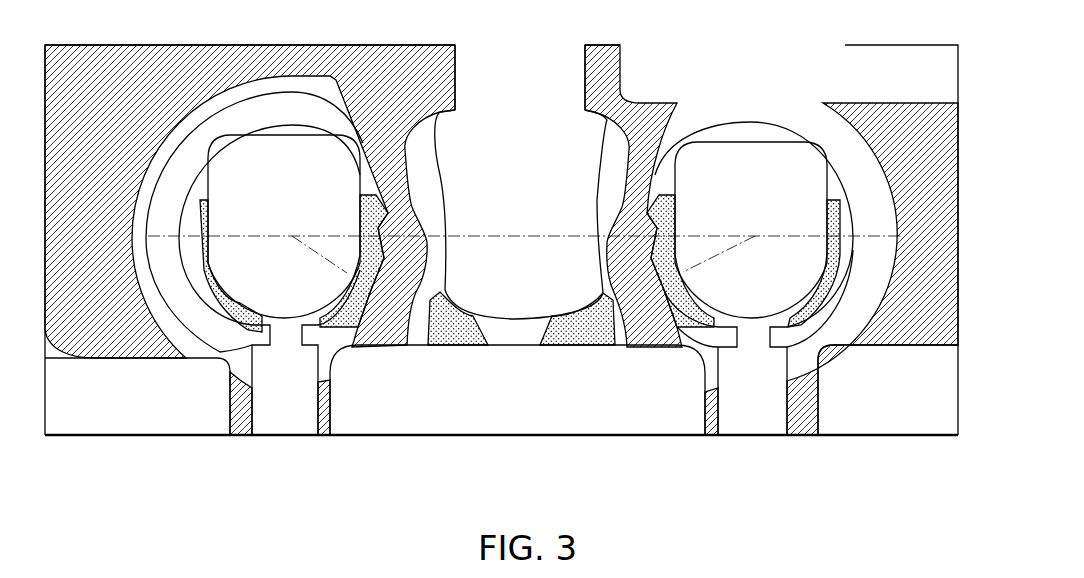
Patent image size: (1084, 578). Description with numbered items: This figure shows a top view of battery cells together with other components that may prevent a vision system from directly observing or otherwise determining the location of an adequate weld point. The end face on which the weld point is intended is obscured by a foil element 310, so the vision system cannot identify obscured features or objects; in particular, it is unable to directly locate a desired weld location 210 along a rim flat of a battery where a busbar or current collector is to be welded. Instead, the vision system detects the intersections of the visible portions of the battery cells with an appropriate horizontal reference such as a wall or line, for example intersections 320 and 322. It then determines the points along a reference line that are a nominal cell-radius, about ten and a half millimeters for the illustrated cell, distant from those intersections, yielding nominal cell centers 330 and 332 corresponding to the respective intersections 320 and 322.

The location 210 is at (573, 233).
The foil element 310 is at (498, 330).
The intersection 320 is at (500, 285).
The intersection 322 is at (541, 318).
The nominal cell center 330 is at (291, 236).
The nominal cell center 332 is at (753, 236).